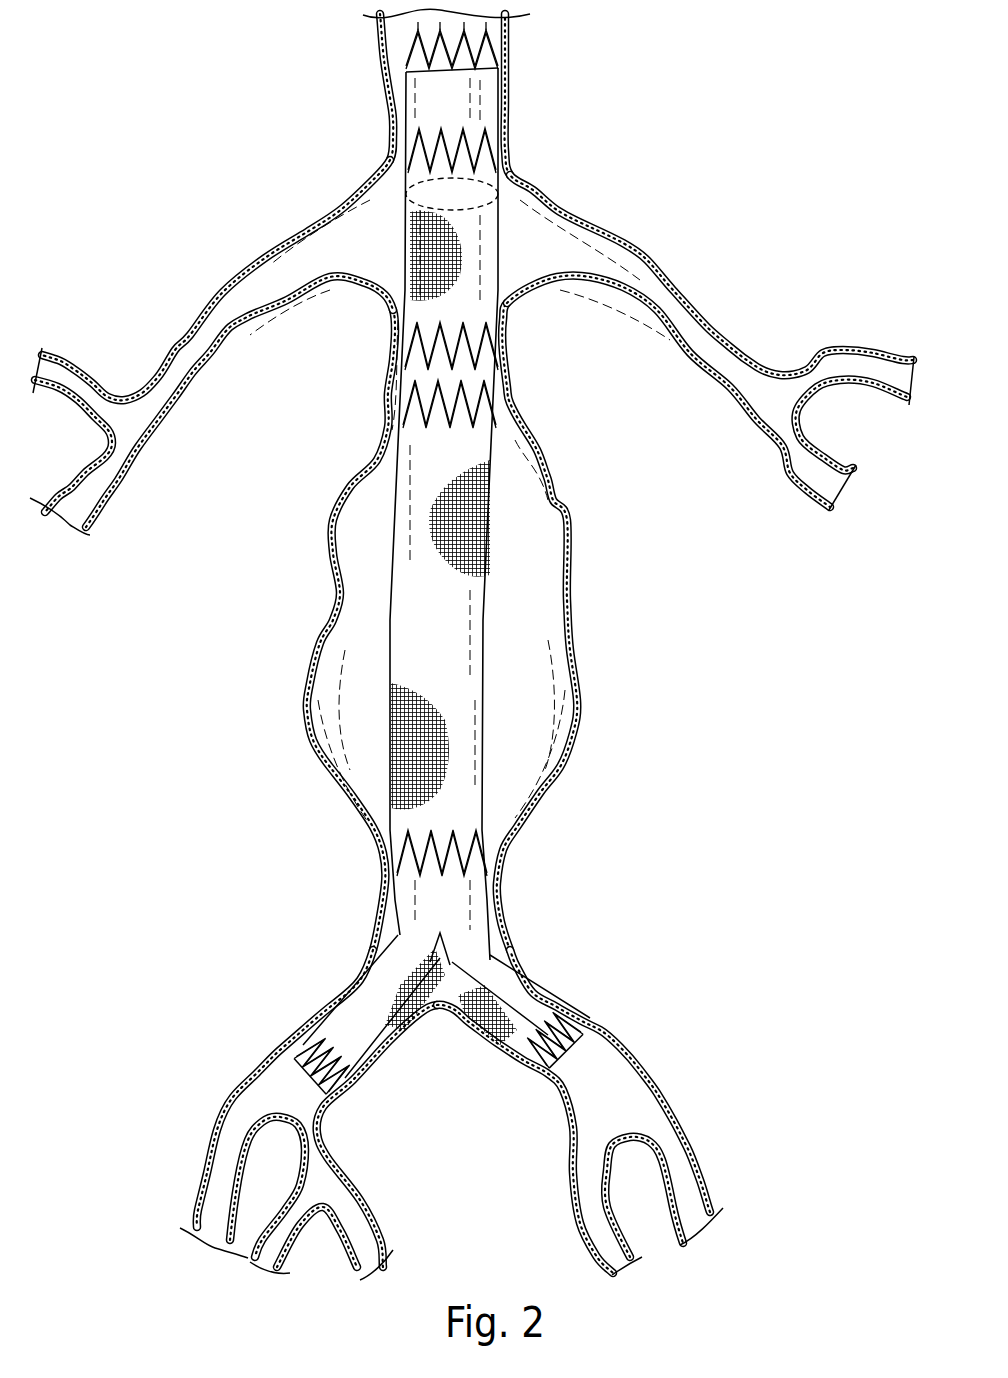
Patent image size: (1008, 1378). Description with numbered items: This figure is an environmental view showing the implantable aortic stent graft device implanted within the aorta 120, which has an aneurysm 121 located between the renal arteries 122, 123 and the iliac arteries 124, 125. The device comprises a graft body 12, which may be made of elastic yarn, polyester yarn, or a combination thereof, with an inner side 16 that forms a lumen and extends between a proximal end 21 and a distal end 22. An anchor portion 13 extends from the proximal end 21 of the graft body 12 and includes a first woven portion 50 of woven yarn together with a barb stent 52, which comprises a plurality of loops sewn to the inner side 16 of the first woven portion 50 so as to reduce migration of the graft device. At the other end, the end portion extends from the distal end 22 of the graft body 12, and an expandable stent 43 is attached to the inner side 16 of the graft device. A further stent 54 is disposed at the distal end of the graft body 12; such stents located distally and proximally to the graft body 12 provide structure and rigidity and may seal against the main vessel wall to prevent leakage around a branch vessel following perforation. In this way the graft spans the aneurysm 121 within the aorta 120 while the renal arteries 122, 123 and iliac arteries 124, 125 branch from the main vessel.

The graft body 12 is at (406, 687).
The anchor portion 13 is at (430, 98).
The inner side 16 is at (437, 200).
The proximal end 21 is at (427, 118).
The distal end 22 is at (433, 900).
The expandable stent 43 is at (420, 833).
The first woven portion 50 is at (400, 57).
The barb stent 52 is at (478, 28).
The stent 54 is at (417, 930).
The aorta 120 is at (572, 499).
The aneurysm 121 is at (527, 677).
The renal artery 122 is at (540, 240).
The renal artery 123 is at (368, 240).
The iliac artery 124 is at (607, 1083).
The iliac artery 125 is at (287, 1087).